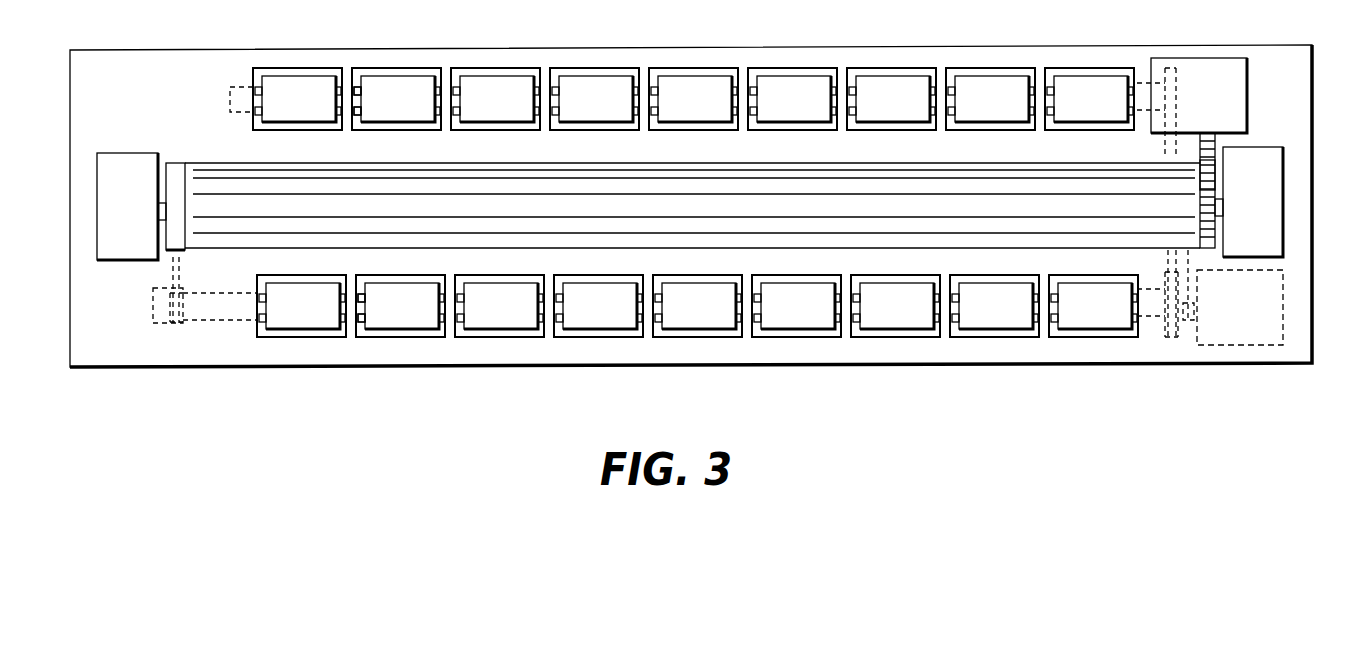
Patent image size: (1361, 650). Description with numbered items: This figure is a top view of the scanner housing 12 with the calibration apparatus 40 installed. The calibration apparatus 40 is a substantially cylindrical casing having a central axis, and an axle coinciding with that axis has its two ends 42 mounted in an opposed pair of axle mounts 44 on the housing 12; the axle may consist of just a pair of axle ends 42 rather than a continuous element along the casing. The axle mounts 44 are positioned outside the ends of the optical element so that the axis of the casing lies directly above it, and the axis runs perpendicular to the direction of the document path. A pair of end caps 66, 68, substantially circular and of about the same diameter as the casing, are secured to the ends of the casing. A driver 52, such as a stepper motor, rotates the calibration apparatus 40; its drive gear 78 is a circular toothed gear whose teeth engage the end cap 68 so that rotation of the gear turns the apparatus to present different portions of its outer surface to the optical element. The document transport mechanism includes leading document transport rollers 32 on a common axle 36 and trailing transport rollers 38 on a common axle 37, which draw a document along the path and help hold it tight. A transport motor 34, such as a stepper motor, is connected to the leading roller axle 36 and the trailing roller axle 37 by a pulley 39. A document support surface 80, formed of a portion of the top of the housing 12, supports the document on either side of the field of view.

The housing 12 is at (1150, 347).
The leading document transport rollers 32 is at (293, 322).
The transport motor 34 is at (1283, 330).
The common axle 36 is at (363, 310).
The common axle 37 is at (360, 93).
The trailing transport rollers 38 is at (290, 82).
The pulley 39 is at (1188, 265).
The calibration apparatus 40 is at (237, 163).
The axle ends 42 is at (162, 205).
The axle mounts 44 is at (128, 158).
The driver 52 is at (1198, 67).
The end cap 66 is at (173, 171).
The end cap 68 is at (1207, 188).
The drive gear 78 is at (1216, 139).
The document support surface 80 is at (1100, 260).